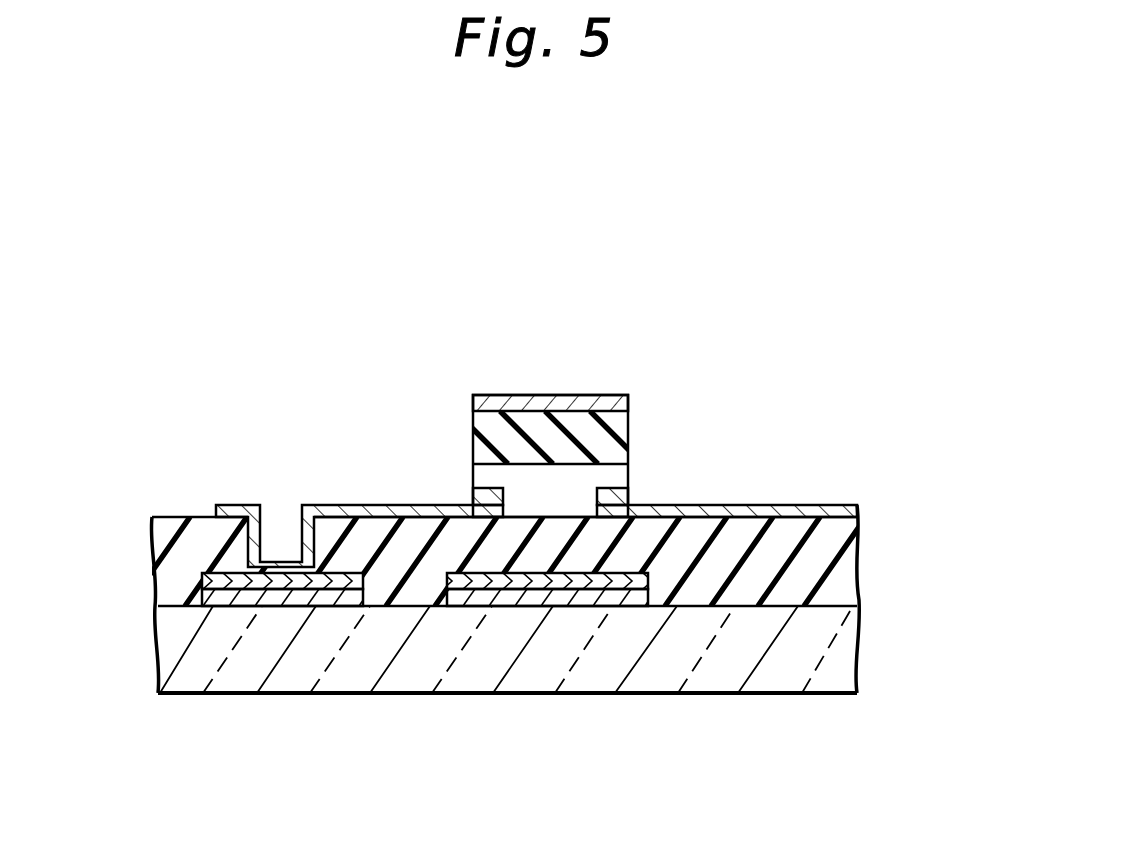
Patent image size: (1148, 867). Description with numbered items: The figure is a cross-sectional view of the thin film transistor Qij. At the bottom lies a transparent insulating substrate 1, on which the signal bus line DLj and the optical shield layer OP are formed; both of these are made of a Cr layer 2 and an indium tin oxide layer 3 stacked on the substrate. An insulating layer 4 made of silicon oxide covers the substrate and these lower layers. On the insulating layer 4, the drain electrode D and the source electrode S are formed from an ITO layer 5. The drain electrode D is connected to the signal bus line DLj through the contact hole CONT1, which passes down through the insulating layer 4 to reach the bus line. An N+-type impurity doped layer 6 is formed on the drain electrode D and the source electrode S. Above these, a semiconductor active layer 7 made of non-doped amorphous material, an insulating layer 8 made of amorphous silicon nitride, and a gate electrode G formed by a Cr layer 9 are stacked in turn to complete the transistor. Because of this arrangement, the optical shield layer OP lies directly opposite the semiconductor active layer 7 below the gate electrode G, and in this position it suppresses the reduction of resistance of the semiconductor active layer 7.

The transparent insulating substrate 1 is at (845, 657).
The Cr layer 2 is at (255, 597).
The indium tin oxide (ITO) layer 3 is at (342, 585).
The insulating layer 4 is at (845, 570).
The ITO layer 5 is at (857, 508).
The N+-type impurity doped layer 6 is at (478, 492).
The semiconductor active layer 7 is at (558, 478).
The insulating layer 8 is at (618, 425).
The Cr layer 9 is at (617, 403).
The contact hole CONT1 is at (285, 527).
The drain electrode D is at (372, 510).
The gate electrode G is at (545, 403).
The source electrode S is at (790, 509).
The TFT Qij is at (693, 197).
The signal bus line DLj is at (372, 762).
The optical shield layer OP is at (667, 762).